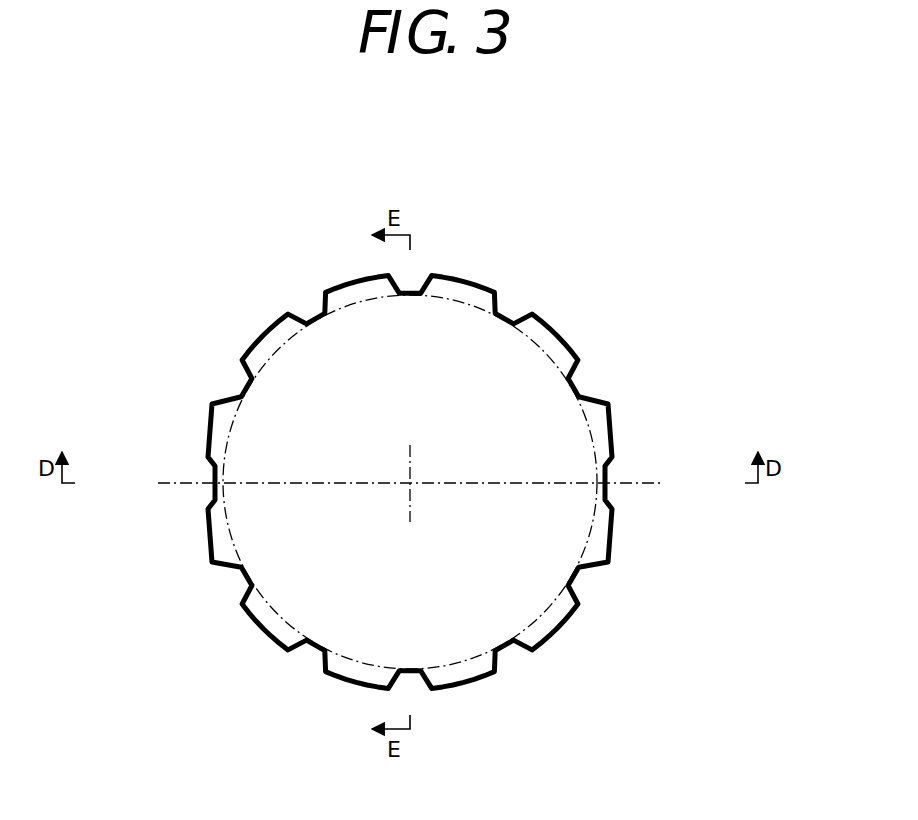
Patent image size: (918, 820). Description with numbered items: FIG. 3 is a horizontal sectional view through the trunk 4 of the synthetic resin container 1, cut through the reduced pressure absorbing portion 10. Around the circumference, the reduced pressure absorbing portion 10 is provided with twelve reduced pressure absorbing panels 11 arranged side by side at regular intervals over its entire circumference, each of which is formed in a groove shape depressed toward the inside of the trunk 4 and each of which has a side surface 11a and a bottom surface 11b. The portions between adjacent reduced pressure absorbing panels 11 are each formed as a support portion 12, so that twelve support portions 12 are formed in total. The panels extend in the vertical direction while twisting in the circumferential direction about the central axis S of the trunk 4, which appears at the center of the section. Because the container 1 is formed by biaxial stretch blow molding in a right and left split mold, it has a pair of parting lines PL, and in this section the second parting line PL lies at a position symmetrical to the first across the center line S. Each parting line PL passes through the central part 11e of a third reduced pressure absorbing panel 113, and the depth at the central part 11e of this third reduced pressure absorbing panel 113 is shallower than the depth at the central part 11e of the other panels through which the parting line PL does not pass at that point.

The synthetic resin container 1 is at (660, 243).
The trunk 4 is at (536, 268).
The reduced pressure absorbing portion 10 is at (563, 330).
The reduced pressure absorbing panel 11 is at (411, 286).
The support portion 12 is at (211, 406).
The side surface 11a is at (208, 464).
The bottom surface 11b is at (180, 497).
The central part 11e is at (189, 478).
The third reduced pressure absorbing panel 113 is at (210, 507).
The parting line PL is at (212, 479).
The axis (central axis) S is at (411, 482).